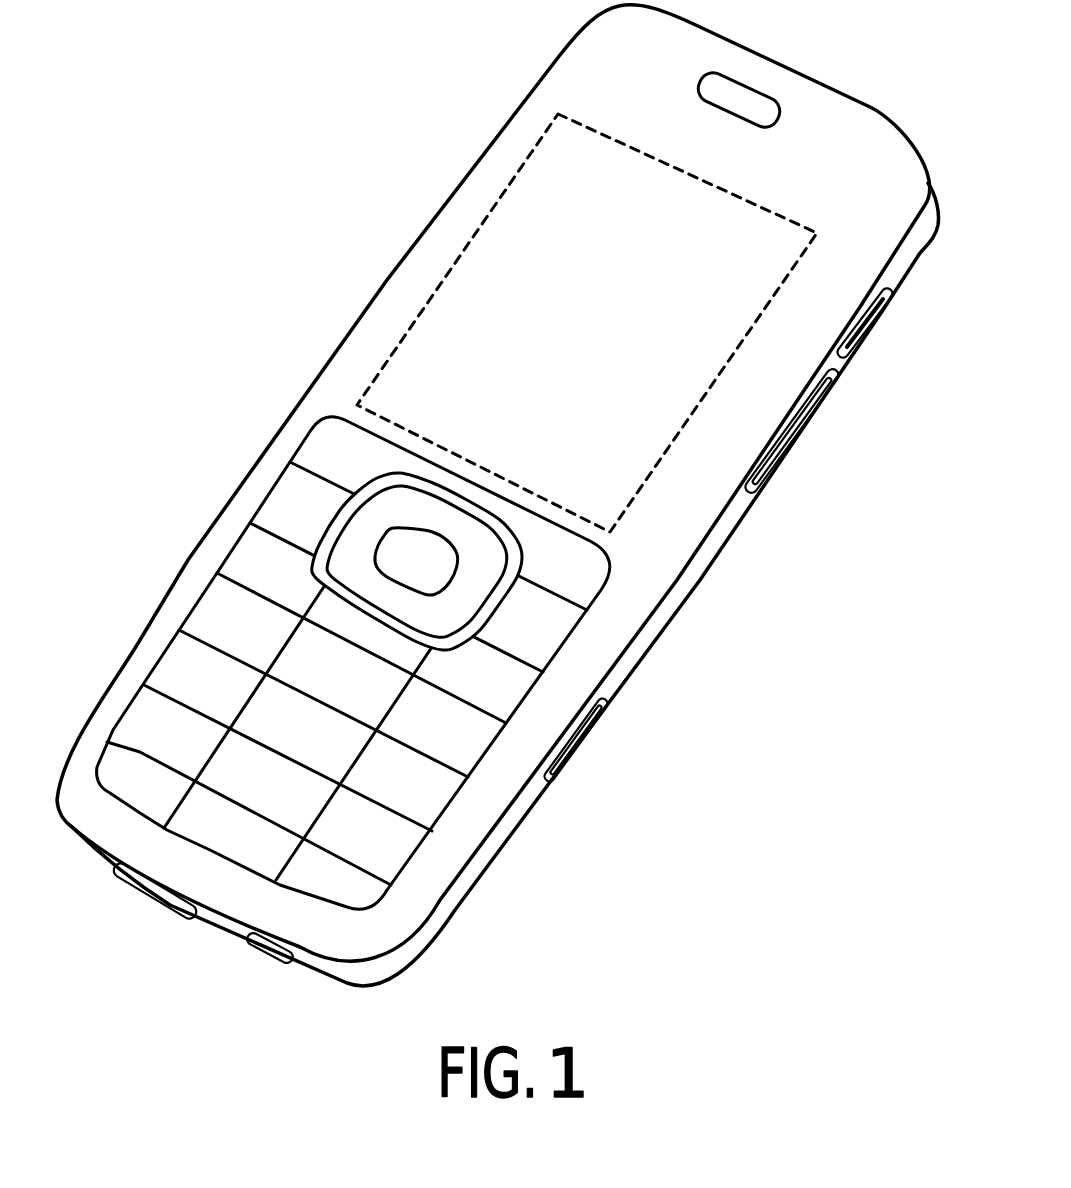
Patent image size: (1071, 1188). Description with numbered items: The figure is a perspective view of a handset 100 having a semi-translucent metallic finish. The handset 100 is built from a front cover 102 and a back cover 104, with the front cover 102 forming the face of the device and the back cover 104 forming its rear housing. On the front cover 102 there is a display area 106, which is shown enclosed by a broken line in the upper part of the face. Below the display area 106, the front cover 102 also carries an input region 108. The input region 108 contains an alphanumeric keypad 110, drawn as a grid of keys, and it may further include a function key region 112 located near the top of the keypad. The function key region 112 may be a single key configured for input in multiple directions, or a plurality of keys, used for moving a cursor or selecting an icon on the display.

The handset 100 is at (495, 495).
The front cover 102 is at (333, 377).
The back cover 104 is at (733, 513).
The display area 106 is at (562, 148).
The input region 108 is at (290, 517).
The alphanumeric keypad 110 is at (233, 777).
The function key region 112 is at (425, 562).